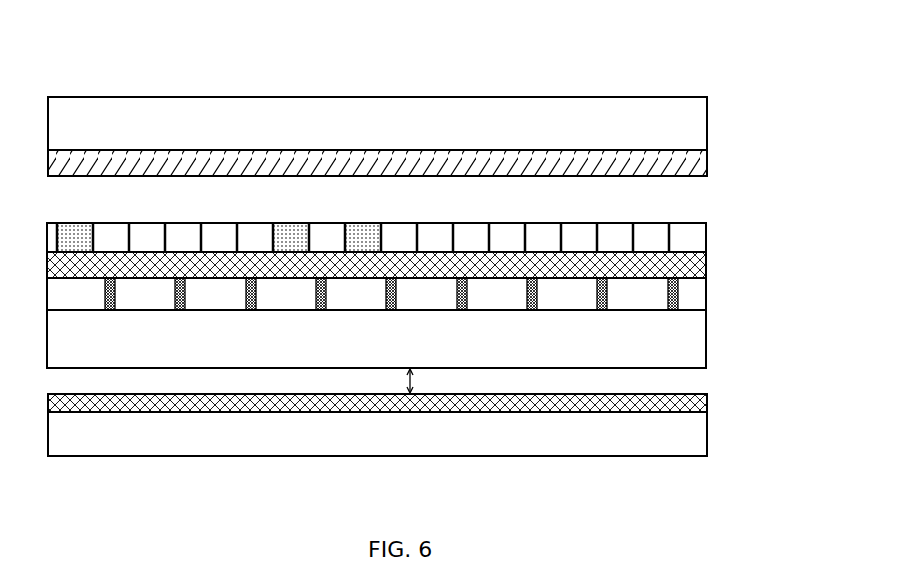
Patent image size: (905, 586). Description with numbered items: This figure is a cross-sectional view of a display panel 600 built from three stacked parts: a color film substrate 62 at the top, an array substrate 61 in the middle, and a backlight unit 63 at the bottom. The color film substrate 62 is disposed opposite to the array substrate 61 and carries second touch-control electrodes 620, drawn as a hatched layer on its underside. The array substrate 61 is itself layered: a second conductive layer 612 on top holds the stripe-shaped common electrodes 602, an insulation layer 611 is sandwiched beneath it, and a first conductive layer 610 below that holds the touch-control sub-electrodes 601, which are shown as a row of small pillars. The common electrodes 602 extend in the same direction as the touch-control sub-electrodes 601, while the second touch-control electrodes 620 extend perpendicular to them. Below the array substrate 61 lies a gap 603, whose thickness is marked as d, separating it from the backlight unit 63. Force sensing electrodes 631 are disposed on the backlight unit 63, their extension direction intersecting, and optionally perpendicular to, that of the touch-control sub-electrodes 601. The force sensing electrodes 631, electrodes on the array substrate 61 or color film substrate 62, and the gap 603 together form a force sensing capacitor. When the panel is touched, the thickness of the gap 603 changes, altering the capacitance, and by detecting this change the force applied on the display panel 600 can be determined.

The display panel 600 is at (714, 39).
The color film substrate 62 is at (431, 137).
The second touch-control electrodes 620 is at (408, 162).
The array substrate 61 is at (432, 292).
The common electrodes 602 is at (654, 223).
The second conductive layer 612 is at (692, 241).
The insulation layer 611 is at (695, 268).
The first conductive layer 610 is at (402, 313).
The touch-control sub-electrodes 601 is at (607, 311).
The gap 603 is at (402, 374).
The backlight unit 63 is at (431, 421).
The force sensing electrodes 631 is at (700, 406).